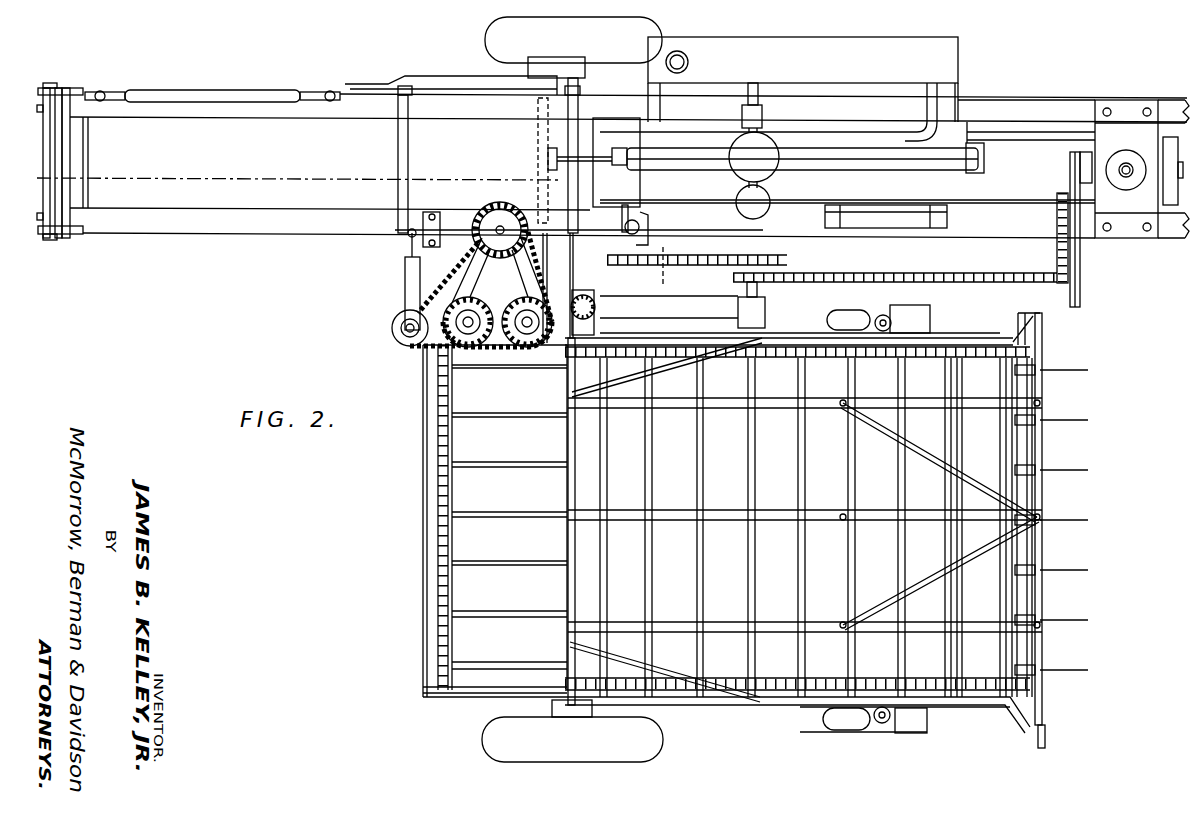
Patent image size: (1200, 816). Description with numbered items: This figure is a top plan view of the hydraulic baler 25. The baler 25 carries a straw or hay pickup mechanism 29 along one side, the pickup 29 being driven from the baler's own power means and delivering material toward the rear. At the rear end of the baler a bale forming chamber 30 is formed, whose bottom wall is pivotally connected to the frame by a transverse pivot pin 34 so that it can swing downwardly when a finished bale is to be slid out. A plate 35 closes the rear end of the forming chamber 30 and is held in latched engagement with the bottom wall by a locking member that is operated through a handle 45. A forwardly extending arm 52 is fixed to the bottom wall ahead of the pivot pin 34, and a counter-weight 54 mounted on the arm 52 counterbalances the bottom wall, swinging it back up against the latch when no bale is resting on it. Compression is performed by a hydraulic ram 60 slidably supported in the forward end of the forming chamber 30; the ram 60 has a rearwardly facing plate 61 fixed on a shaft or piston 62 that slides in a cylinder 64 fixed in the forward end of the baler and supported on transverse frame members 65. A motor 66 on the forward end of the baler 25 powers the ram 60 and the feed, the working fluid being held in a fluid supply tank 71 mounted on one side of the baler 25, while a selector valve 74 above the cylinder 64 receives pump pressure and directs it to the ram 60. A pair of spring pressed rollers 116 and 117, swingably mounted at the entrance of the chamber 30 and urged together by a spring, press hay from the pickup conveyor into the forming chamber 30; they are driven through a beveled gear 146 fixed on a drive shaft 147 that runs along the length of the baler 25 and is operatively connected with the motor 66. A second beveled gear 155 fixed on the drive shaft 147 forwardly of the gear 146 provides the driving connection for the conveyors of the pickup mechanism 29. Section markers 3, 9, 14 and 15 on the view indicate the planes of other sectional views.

The section line 3- 3 is at (430, 349).
The section line 9- 9 is at (501, 138).
The section line 14- 14 is at (383, 192).
The section line 15- 15 is at (36, 175).
The hydraulic baler 25 is at (1021, 108).
The pickup mechanism 29 is at (768, 714).
The bale forming chamber 30 is at (192, 120).
The pivot pin 34 is at (406, 152).
The plate 35 is at (68, 160).
The handle 45 is at (213, 92).
The forwardly extending arm 52 is at (440, 77).
The counter-weight 54 is at (577, 58).
The hydraulic ram 60 is at (538, 107).
The rearwardly facing plate 61 is at (548, 160).
The shaft or piston 62 is at (598, 157).
The cylinder 64 is at (960, 175).
The transverse frame members 65 is at (693, 192).
The motor 66 is at (1128, 195).
The fluid supply tank 71 is at (958, 60).
The selector valve 74 is at (770, 142).
The spring pressed roller 116 is at (531, 360).
The spring pressed roller 117 is at (488, 360).
The second beveled gear 146 is at (532, 243).
The drive shaft 147 is at (862, 240).
The second beveled gear 155 is at (640, 222).